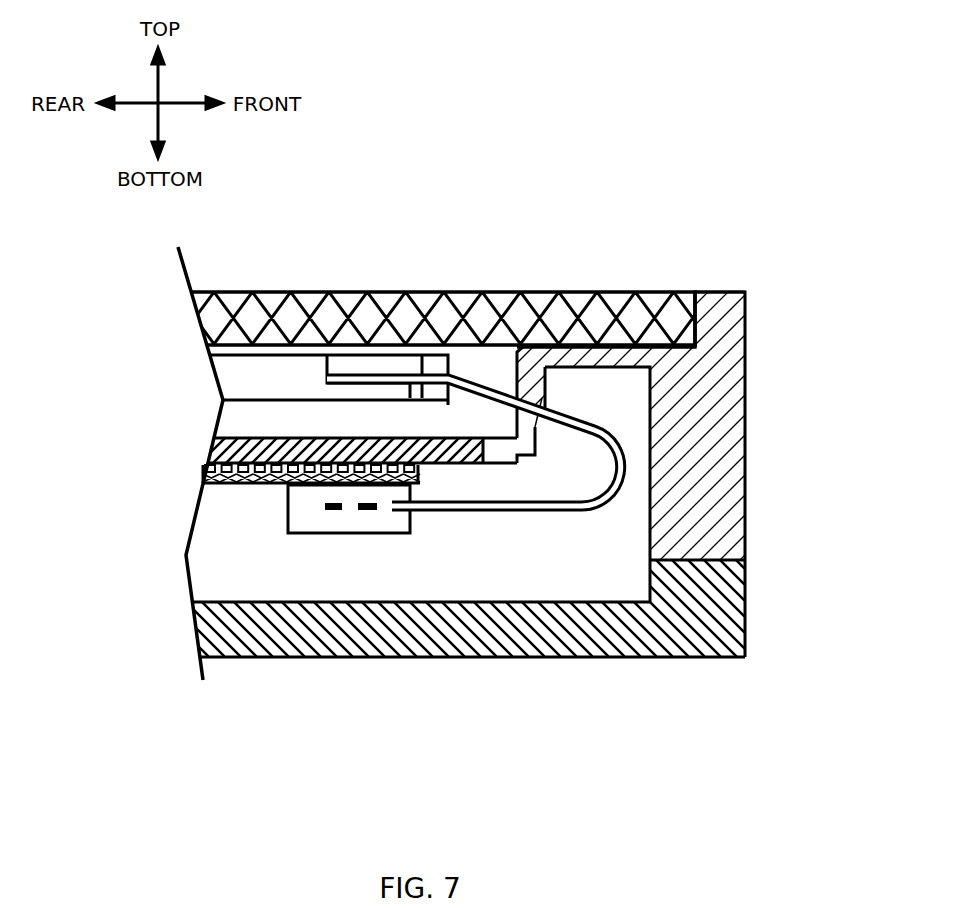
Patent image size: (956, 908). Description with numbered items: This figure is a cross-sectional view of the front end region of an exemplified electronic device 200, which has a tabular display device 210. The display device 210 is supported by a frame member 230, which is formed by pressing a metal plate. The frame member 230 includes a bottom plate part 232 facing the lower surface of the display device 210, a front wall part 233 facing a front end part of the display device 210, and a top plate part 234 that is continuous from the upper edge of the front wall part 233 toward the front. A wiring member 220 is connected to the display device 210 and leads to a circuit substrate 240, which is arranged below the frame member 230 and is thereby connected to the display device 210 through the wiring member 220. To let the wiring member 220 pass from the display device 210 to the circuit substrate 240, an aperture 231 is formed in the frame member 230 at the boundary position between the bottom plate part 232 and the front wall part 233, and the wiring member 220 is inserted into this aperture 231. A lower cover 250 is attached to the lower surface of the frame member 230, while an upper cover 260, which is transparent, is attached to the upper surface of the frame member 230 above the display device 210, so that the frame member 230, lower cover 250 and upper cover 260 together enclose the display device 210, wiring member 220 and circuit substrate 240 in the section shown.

The electronic device 200 is at (699, 134).
The display device 210 is at (240, 376).
The wiring member 220 is at (578, 512).
The frame member 230 is at (735, 357).
The aperture 231 is at (503, 452).
The bottom plate part 232 is at (213, 446).
The front wall part 233 is at (520, 340).
The top plate part 234 is at (598, 355).
The circuit substrate 240 is at (232, 482).
The lower cover 250 is at (327, 642).
The upper cover 260 is at (355, 323).